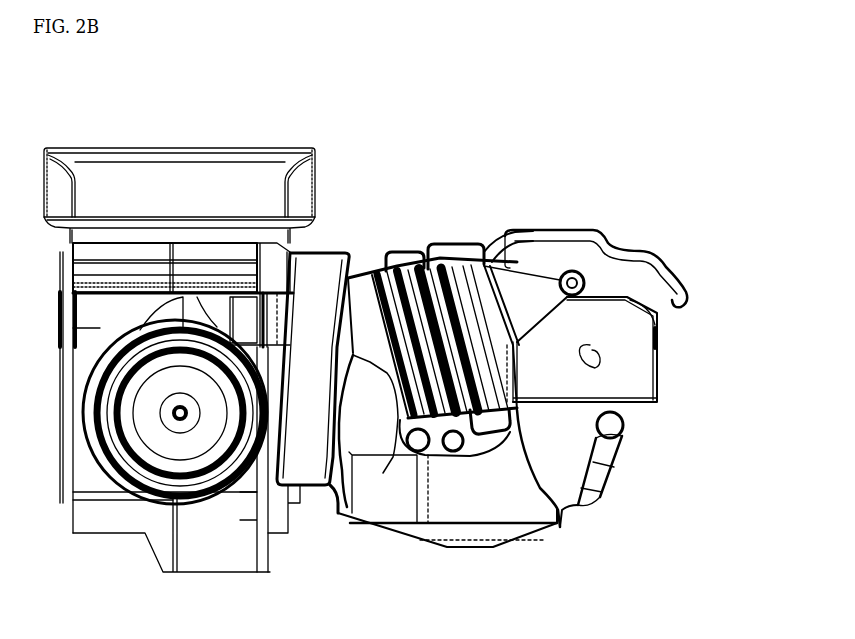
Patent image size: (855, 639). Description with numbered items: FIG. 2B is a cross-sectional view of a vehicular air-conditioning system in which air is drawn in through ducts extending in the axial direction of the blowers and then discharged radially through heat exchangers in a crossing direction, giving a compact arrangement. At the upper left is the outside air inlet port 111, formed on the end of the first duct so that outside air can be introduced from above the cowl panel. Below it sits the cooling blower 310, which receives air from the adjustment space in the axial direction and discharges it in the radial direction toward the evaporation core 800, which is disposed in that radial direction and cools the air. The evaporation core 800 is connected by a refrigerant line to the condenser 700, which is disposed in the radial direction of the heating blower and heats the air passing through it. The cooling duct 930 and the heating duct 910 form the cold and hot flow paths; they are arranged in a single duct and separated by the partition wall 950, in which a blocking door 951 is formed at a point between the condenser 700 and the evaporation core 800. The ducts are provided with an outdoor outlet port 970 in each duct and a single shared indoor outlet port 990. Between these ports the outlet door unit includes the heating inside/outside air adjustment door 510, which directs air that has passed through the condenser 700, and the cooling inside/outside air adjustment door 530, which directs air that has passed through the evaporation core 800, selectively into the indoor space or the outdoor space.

The outside air inlet port 111 is at (187, 158).
The cooling blower 310 is at (150, 492).
The evaporation core 800 is at (337, 253).
The condenser 700 is at (447, 245).
The cooling duct 930 is at (487, 253).
The heating inside/outside air adjustment door 510 is at (525, 297).
The outdoor outlet port 970 is at (673, 307).
The indoor outlet port 990 is at (600, 358).
The cooling inside/outside air adjustment door 530 is at (612, 466).
The partition wall 950 is at (473, 453).
The blocking door 951 is at (383, 473).
The heating duct 910 is at (448, 520).